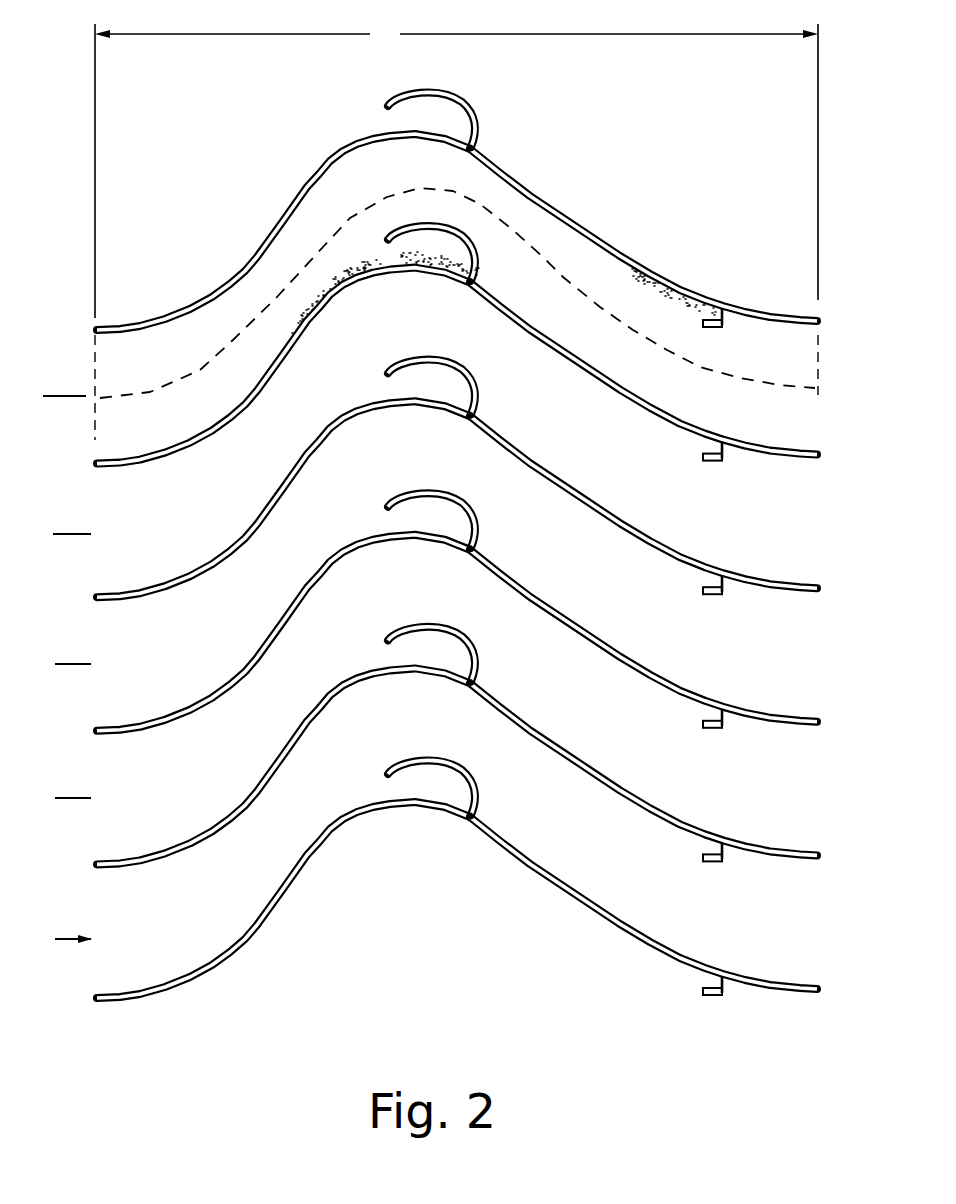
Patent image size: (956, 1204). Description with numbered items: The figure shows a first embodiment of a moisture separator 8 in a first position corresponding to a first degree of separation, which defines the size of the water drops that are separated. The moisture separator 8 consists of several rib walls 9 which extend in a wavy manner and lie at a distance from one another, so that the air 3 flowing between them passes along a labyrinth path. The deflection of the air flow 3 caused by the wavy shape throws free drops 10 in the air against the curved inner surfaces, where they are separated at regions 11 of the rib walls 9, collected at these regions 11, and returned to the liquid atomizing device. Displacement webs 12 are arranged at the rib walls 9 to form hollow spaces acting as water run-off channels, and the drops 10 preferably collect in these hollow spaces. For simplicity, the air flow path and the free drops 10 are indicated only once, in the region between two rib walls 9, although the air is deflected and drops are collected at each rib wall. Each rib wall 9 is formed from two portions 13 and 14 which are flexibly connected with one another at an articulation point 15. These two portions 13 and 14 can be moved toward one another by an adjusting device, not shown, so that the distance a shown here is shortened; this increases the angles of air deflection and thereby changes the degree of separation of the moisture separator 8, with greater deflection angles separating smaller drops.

The air flow 3 is at (75, 398).
The moisture separator 8 is at (233, 180).
The rib wall 9 is at (588, 232).
The free drop 10 is at (677, 288).
The region of rib wall 11 is at (697, 289).
The displacement web 12 is at (454, 90).
The first portion of rib wall 13 is at (268, 645).
The second portion of rib wall 14 is at (650, 681).
The articulation point 15 is at (467, 554).
The distance a is at (456, 228).